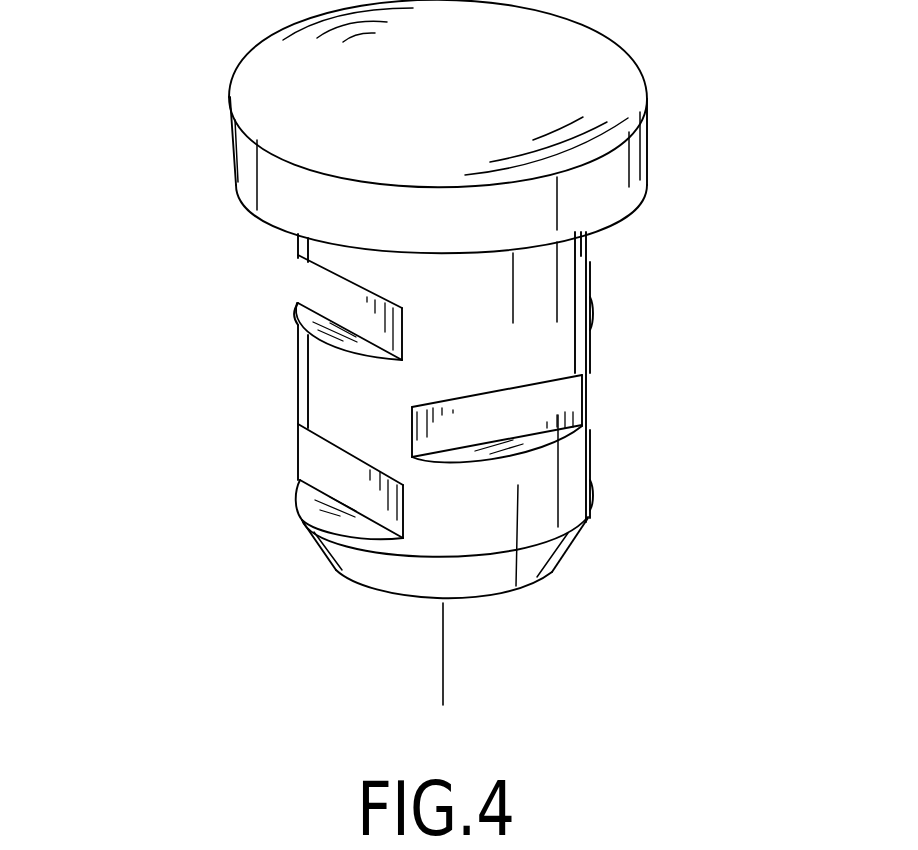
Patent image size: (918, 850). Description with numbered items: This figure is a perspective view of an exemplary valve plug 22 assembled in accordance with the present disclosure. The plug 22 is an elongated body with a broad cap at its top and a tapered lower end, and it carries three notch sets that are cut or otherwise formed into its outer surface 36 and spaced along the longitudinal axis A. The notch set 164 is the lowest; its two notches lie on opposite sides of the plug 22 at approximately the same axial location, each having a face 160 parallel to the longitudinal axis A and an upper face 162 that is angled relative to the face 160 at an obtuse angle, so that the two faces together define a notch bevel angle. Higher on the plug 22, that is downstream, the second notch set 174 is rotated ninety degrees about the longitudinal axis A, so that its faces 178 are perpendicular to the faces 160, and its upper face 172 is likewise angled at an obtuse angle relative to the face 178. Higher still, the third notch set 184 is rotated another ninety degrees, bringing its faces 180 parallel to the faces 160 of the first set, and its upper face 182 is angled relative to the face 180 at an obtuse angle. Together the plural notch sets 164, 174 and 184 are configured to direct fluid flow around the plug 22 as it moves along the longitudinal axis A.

The plug 22 is at (205, 132).
The outer surface 36 is at (498, 522).
The face 160 is at (300, 480).
The upper face 162 is at (300, 442).
The notch set 164 is at (300, 460).
The upper face 172 is at (588, 385).
The second notch set 174 is at (588, 397).
The face 178 is at (588, 417).
The face 180 is at (323, 292).
The upper face 182 is at (299, 263).
The third notch set 184 is at (304, 275).
The longitudinal axis A is at (443, 642).